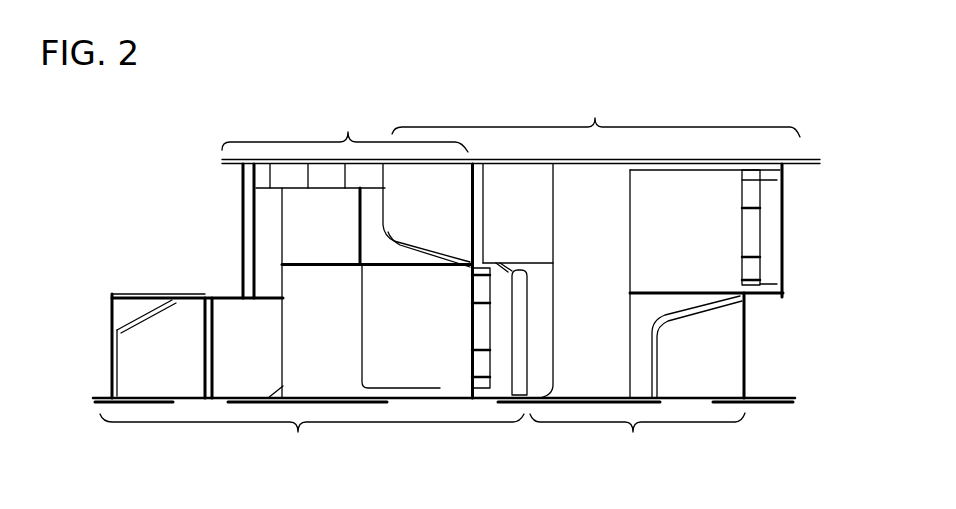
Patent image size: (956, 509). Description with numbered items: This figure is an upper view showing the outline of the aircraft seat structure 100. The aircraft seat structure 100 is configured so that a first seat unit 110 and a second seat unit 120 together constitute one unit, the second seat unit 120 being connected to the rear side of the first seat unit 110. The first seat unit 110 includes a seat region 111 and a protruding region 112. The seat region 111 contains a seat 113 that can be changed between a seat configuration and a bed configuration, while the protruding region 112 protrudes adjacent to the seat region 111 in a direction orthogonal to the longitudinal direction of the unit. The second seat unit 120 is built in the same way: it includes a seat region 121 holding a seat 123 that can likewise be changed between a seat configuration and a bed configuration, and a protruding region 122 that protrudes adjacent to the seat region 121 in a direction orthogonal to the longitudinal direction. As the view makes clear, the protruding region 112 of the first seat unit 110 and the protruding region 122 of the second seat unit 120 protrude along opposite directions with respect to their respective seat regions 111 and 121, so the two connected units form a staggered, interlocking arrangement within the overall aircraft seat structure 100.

The aircraft seat structure 100 is at (757, 100).
The first seat unit 110 is at (241, 275).
The seat region 111 is at (309, 379).
The protruding region 112 is at (347, 254).
The seat 113 is at (417, 363).
The second seat unit 120 is at (745, 346).
The seat region 121 is at (596, 245).
The protruding region 122 is at (645, 378).
The seat 123 is at (705, 232).